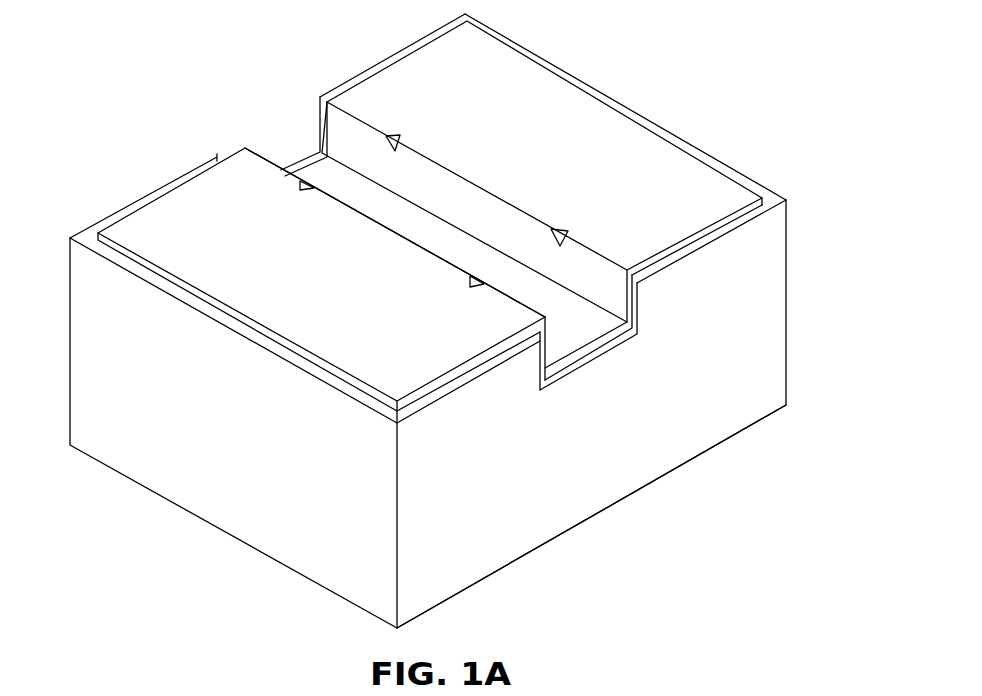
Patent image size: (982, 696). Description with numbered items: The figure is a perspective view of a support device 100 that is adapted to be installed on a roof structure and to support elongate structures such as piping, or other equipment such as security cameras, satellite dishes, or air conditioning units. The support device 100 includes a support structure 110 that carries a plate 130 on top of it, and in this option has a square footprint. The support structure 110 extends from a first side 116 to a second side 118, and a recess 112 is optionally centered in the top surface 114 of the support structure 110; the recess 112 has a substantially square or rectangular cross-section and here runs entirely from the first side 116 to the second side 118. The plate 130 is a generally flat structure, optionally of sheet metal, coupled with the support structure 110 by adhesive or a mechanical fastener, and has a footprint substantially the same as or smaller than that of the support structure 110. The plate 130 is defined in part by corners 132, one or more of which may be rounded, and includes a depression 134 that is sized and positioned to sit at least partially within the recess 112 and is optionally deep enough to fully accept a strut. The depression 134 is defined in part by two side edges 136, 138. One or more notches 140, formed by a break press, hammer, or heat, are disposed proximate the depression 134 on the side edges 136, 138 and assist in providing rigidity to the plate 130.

The support device 100 is at (663, 69).
The support structure 110 is at (789, 301).
The recess 112 is at (637, 305).
The top surface 114 is at (400, 54).
The first side 116 is at (651, 471).
The second side 118 is at (143, 197).
The plate 130 is at (721, 182).
The corners 132 is at (768, 199).
The depression 134 is at (318, 168).
The side edge 136 is at (471, 181).
The side edge 138 is at (396, 234).
The notches 140 is at (467, 278).